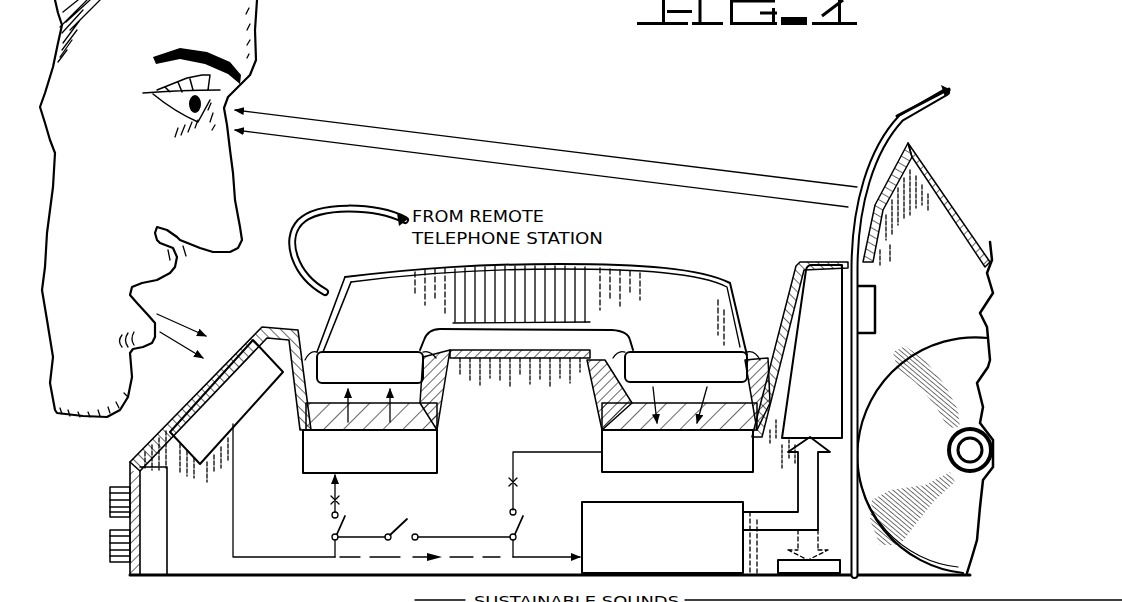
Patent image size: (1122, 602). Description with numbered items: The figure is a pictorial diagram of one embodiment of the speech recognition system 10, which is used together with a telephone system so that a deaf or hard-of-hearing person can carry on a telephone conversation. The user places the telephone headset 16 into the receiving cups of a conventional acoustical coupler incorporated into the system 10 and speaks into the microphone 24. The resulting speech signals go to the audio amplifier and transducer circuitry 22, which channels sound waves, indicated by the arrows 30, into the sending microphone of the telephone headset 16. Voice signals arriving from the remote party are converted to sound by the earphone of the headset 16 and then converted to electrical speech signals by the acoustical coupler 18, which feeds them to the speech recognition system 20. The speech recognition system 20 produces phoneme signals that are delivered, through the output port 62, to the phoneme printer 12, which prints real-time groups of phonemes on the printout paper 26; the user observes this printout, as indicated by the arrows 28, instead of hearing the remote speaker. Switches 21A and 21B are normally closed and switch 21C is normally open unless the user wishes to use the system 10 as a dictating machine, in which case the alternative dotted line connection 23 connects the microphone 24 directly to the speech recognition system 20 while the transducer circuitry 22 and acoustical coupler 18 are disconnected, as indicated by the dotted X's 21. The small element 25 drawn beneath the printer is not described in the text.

The speech recognition system 10 is at (568, 70).
The phoneme printer 12 is at (826, 359).
The telephone headset 16 is at (645, 277).
The acoustical coupler 18 is at (688, 464).
The speech recognition system 20 is at (667, 503).
The dotted X's 21 is at (340, 502).
The switch 21A is at (333, 531).
The switch 21B is at (517, 534).
The switch 21C is at (395, 525).
The audio amplifier and transducer circuitry 22 is at (380, 460).
The alternative dotted line connection 23 is at (458, 557).
The microphone 24 is at (253, 393).
The output device 25 is at (812, 548).
The printout paper 26 is at (916, 117).
The arrows 28 is at (569, 150).
The arrows 30 is at (369, 404).
The output port 62 is at (804, 496).